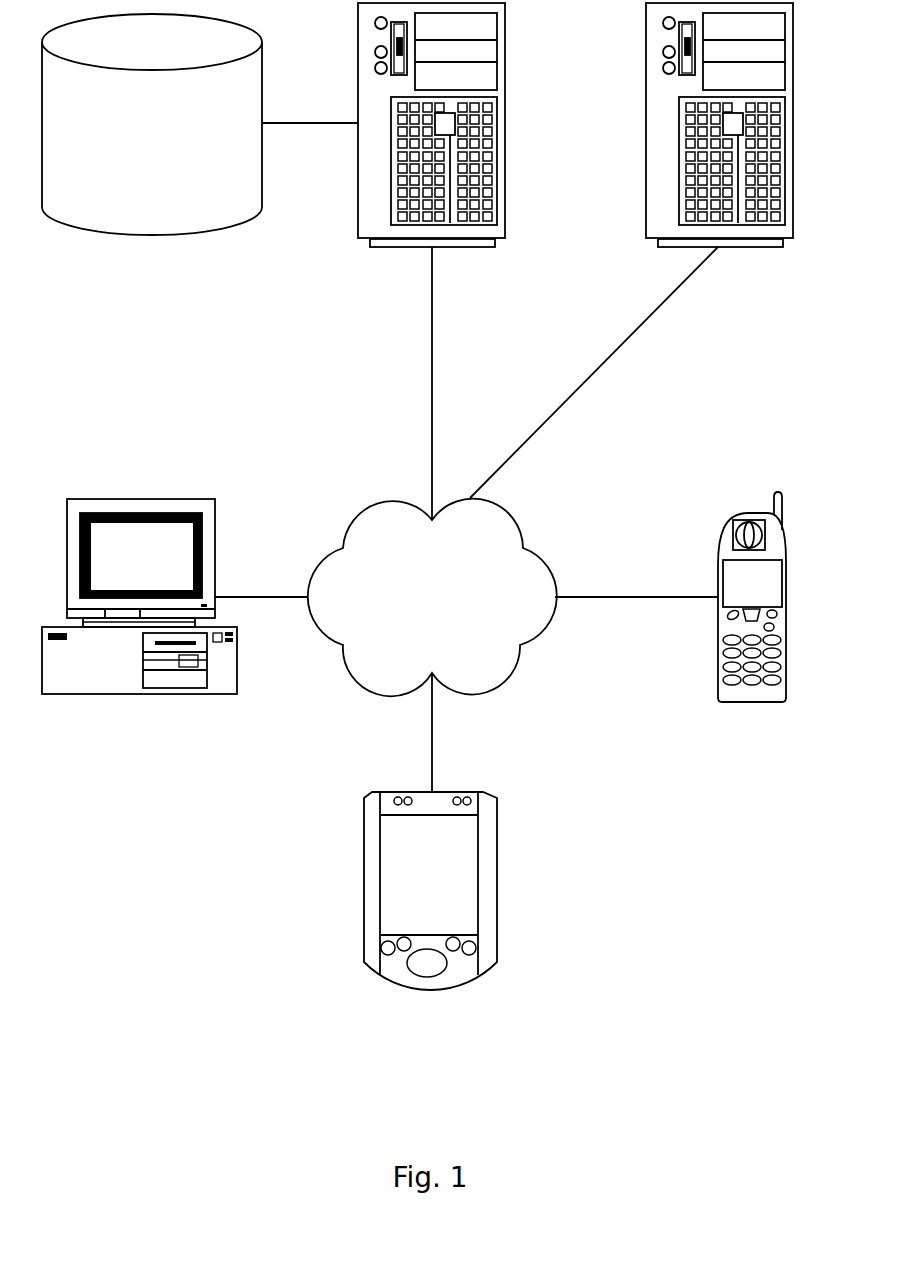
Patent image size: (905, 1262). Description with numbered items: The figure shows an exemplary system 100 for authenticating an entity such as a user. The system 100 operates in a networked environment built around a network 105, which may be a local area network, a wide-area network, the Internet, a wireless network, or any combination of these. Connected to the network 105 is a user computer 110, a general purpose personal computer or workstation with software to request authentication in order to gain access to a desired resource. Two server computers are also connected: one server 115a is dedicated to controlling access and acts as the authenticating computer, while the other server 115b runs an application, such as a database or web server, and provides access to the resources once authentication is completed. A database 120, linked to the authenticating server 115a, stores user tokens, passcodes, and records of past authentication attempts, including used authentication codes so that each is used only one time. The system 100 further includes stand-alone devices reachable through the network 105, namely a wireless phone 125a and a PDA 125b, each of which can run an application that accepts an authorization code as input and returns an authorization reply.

The system 100 is at (244, 831).
The network 105 is at (507, 672).
The user computer 110 is at (140, 694).
The server computer 115a is at (483, 247).
The server computer 115b is at (770, 247).
The database 120 is at (153, 235).
The wireless phone 125a is at (752, 702).
The PDA 125b is at (428, 990).